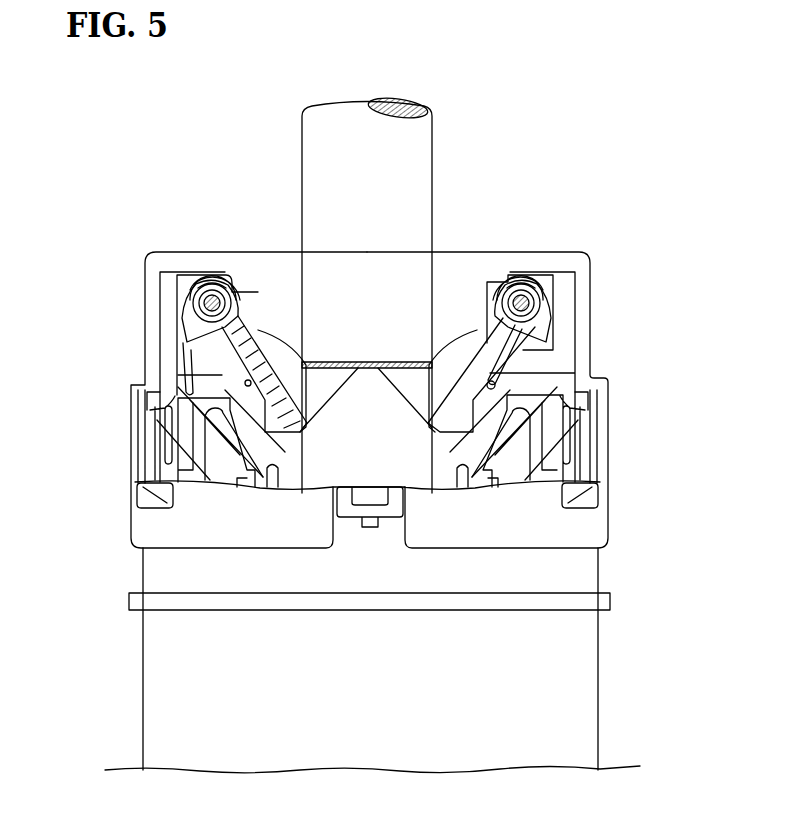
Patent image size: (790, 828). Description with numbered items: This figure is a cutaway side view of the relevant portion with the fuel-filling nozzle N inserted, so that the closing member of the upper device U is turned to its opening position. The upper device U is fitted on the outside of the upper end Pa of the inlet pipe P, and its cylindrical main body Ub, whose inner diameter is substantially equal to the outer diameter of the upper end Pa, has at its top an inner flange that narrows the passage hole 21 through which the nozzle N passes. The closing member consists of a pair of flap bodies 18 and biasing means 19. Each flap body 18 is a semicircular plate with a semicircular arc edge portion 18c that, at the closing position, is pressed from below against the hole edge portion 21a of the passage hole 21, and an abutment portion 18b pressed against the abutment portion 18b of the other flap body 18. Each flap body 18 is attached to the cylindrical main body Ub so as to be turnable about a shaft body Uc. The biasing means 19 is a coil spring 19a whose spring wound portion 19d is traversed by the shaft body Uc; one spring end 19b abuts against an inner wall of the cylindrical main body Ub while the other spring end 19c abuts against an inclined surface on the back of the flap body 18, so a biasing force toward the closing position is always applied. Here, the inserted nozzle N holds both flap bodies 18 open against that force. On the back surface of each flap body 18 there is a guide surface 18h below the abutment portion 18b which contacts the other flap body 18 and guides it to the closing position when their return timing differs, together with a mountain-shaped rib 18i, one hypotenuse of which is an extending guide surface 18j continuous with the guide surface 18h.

The flap body 18 is at (258, 328).
The abutment portion 18b is at (308, 440).
The semicircular arc edge portion 18c is at (219, 296).
The guide surface 18h is at (273, 490).
The mountain-shaped rib 18i is at (140, 478).
The extending guide surface 18j is at (243, 490).
The biasing means 19 is at (205, 272).
The coil spring 19a is at (366, 291).
The one spring end 19b is at (183, 348).
The other spring end 19c is at (150, 398).
The spring wound portion 19d is at (201, 284).
The passage hole 21 is at (393, 268).
The hole edge portion 21a is at (356, 268).
The fuel-filling nozzle N is at (430, 118).
The upper device U is at (588, 254).
The cylindrical main body Ub is at (596, 340).
The shaft body Uc is at (213, 284).
The inlet pipe P is at (580, 712).
The upper end Pa is at (612, 420).